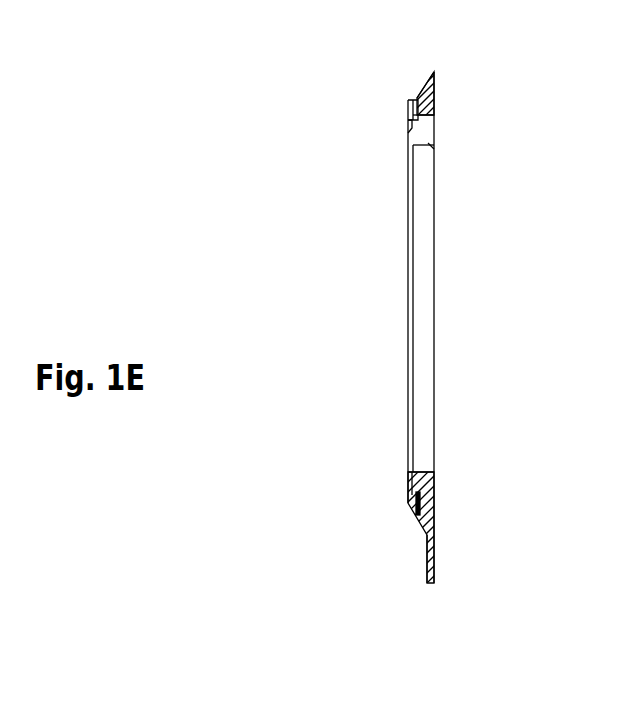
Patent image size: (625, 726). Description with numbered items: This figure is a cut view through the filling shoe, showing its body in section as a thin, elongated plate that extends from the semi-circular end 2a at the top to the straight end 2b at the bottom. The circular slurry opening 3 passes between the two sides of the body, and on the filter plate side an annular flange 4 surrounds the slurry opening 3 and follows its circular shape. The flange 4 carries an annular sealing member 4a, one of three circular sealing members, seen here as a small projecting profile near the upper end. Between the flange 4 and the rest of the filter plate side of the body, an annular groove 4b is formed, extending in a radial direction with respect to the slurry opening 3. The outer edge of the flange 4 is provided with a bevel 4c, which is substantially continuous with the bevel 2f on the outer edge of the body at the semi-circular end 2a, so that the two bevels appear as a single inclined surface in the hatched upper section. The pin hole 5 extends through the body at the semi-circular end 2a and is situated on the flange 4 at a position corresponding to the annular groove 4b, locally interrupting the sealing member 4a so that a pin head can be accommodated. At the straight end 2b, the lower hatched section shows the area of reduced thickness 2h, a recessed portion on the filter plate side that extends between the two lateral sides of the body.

The semi-circular end 2a is at (434, 72).
The straight end 2b is at (435, 583).
The bevel 2f is at (418, 95).
The area of reduced thickness 2h is at (427, 555).
The circular slurry opening 3 is at (434, 428).
The annular flange 4 is at (413, 513).
The annular sealing member 4a is at (408, 135).
The annular groove 4b is at (413, 99).
The bevel 4c is at (412, 103).
The pin hole 5 is at (434, 115).